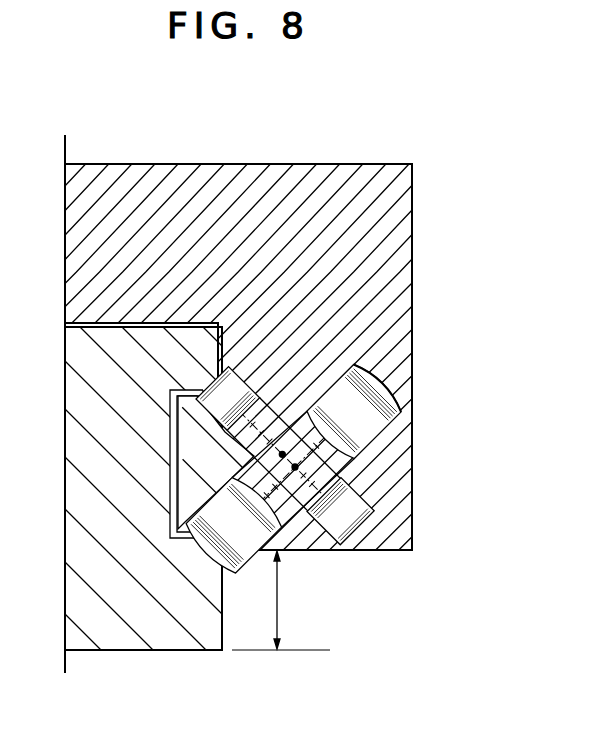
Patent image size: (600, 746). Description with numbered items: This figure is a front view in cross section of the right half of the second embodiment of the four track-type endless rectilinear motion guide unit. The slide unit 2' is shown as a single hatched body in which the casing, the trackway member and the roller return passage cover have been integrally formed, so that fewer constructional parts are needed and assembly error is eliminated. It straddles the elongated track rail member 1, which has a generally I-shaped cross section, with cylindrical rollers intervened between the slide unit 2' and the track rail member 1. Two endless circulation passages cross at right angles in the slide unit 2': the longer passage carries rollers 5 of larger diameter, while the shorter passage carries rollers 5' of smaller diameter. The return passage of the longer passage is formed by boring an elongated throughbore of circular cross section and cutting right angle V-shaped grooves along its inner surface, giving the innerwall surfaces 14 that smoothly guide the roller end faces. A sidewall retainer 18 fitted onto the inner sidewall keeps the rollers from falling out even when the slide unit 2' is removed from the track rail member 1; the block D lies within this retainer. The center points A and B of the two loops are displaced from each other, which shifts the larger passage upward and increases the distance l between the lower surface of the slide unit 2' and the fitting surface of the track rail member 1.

The slide unit 2' is at (238, 393).
The track rail member 1 is at (131, 645).
The sidewall retainer 18 is at (187, 438).
The block D is at (160, 492).
The roller 5 is at (340, 536).
The innerwall surfaces of roller return passages 14 is at (387, 386).
The roller end face 5' is at (398, 395).
The center point of loop A is at (298, 466).
The center point of loop B is at (282, 451).
The distance l is at (281, 600).